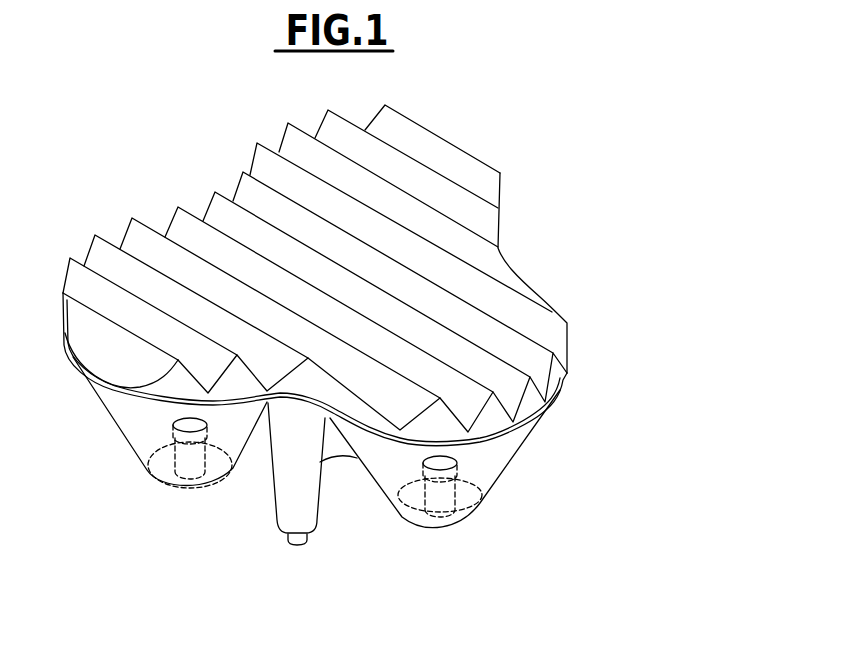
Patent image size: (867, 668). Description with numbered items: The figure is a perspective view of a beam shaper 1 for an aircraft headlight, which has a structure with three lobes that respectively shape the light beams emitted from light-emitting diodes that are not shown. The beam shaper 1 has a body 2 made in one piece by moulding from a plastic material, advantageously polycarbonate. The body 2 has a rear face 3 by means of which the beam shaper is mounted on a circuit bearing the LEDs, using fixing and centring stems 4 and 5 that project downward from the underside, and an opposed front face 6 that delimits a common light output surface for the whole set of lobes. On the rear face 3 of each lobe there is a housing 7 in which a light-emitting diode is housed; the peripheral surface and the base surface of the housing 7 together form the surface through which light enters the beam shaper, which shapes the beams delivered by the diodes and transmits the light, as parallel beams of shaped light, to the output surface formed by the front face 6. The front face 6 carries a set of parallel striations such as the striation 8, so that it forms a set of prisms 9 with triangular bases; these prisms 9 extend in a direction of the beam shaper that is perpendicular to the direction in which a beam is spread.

The beam shaper 1 is at (106, 211).
The body 2 is at (75, 388).
The rear face 3 is at (139, 481).
The fixing and centring stem 4 is at (297, 546).
The fixing and centring stem 5 is at (338, 461).
The front face 6 is at (230, 188).
The housing 7 is at (183, 469).
The striation 8 is at (153, 216).
The prism 9 is at (192, 213).